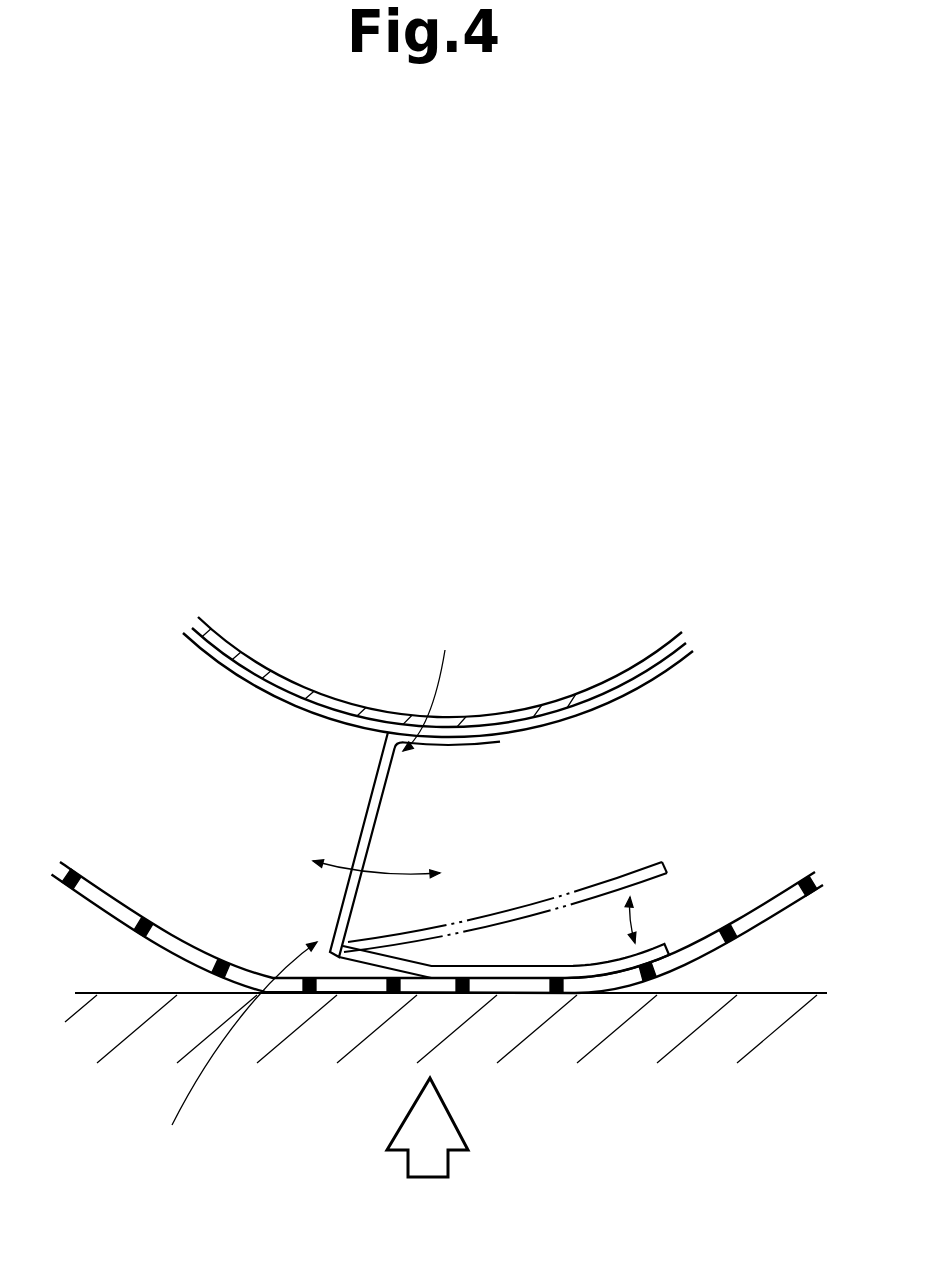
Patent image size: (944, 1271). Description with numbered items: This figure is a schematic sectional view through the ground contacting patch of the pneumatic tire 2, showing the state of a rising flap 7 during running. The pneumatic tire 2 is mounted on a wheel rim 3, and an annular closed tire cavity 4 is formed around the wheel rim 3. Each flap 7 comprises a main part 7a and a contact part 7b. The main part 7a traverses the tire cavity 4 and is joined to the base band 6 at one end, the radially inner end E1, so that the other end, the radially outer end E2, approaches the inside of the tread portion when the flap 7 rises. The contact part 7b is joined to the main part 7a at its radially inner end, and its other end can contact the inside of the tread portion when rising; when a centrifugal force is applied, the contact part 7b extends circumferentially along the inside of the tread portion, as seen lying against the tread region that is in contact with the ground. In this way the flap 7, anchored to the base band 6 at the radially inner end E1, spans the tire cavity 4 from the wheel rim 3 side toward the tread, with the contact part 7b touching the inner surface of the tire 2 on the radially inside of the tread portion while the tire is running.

The pneumatic tire 2 is at (768, 925).
The wheel rim 3 is at (608, 677).
The tire cavity 4 is at (237, 832).
The base band 6 is at (192, 650).
The flap 7 is at (503, 524).
The main part 7a is at (372, 810).
The contact part 7b is at (513, 967).
The radially inner end E1 is at (430, 680).
The radially outer end E2 is at (230, 1056).